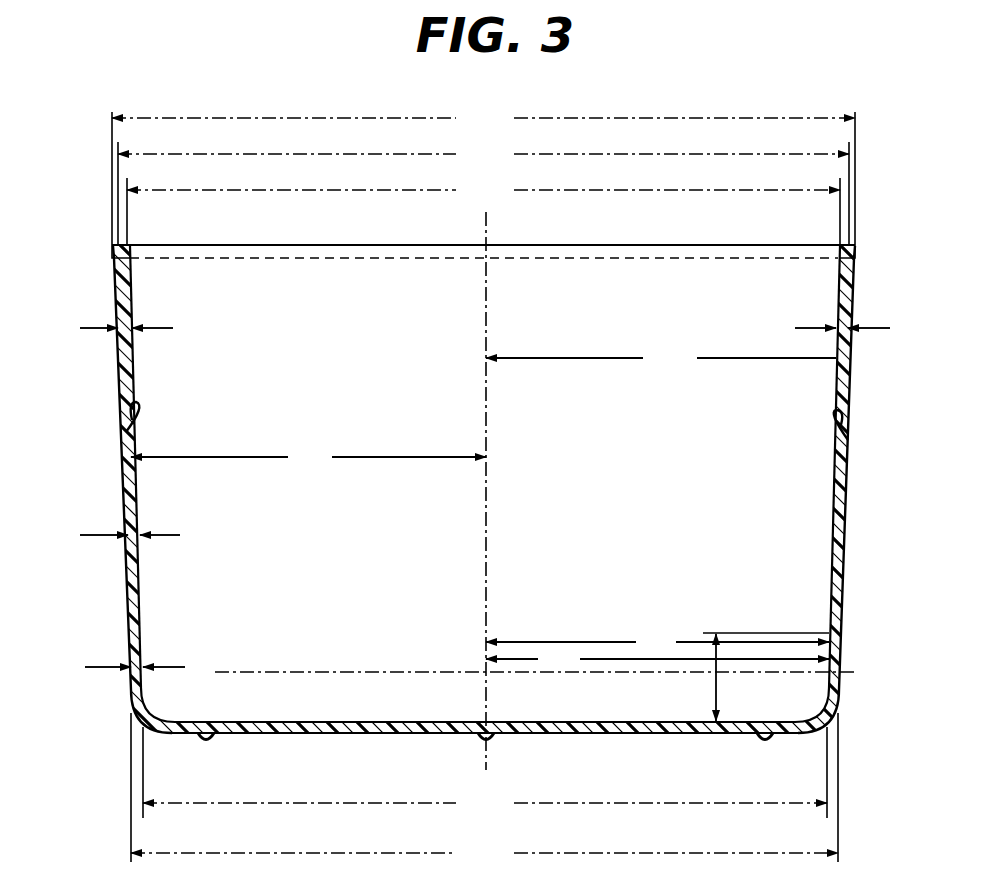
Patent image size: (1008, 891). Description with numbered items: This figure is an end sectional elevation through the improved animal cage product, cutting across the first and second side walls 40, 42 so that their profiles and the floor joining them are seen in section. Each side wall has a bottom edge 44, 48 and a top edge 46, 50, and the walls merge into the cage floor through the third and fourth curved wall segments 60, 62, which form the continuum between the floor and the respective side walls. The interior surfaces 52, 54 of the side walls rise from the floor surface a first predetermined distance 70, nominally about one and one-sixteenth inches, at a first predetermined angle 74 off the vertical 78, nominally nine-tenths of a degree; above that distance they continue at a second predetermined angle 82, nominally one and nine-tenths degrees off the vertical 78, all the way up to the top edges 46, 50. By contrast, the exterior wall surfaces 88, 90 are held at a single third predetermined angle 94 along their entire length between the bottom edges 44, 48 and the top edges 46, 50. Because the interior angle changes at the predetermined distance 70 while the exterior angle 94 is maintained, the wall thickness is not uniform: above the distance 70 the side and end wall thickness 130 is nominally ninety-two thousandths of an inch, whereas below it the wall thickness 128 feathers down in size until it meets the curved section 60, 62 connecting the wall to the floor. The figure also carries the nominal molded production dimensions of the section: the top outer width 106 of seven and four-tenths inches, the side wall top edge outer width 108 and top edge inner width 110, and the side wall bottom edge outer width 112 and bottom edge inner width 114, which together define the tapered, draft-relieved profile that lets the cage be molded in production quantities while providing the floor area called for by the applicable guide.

The first side wall 40 is at (850, 473).
The second side wall 42 is at (120, 490).
The bottom edge 44 is at (842, 690).
The top edge 46 is at (850, 262).
The bottom edge 48 is at (132, 700).
The top edge 50 is at (118, 262).
The interior surface 52 is at (848, 440).
The interior surface 54 is at (126, 432).
The third curved wall segment 60 is at (818, 730).
The fourth curved wall segment 62 is at (158, 720).
The first predetermined distance 70 is at (718, 690).
The first predetermined angle 74 is at (657, 643).
The vertical 78 is at (489, 579).
The second predetermined angle 82 is at (661, 359).
The exterior wall surface 88 is at (836, 567).
The exterior wall surface 90 is at (128, 598).
The third predetermined angle 94 is at (480, 559).
The top outer width 106 is at (483, 119).
The side wall top edge outer width 108 is at (483, 155).
The side wall top edge inner width 110 is at (483, 191).
The side wall bottom edge outer width 112 is at (484, 854).
The side wall bottom edge inner width 114 is at (485, 804).
The wall thickness 128 is at (140, 668).
The wall thickness 130 is at (135, 537).